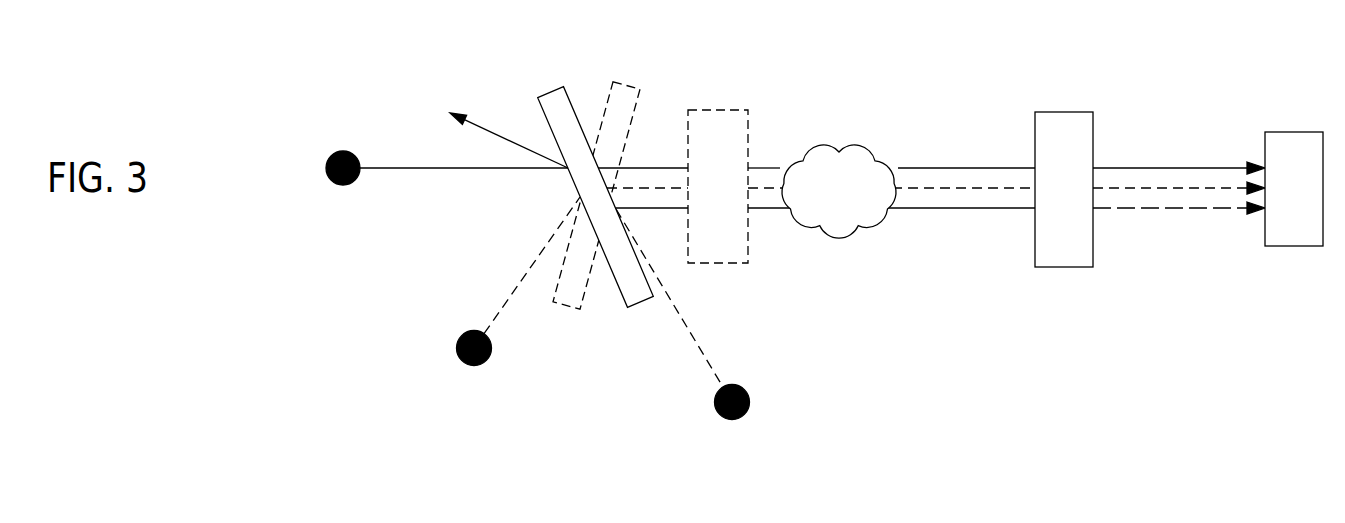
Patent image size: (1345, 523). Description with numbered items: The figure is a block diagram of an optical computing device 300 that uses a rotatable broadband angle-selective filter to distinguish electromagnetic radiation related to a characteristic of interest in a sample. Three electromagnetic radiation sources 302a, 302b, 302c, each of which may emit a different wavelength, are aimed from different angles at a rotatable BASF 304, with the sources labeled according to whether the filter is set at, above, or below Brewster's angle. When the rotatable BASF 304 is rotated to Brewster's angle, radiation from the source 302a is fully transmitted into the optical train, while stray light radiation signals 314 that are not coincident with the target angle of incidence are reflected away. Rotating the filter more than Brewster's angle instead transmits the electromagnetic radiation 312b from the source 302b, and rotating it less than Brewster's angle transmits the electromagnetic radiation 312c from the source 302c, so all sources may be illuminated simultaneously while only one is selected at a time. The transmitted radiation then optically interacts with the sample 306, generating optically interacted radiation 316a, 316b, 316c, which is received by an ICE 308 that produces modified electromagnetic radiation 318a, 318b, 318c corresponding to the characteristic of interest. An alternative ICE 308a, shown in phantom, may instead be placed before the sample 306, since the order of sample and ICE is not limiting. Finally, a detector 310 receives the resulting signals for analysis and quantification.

The optical computing device 300 is at (857, 69).
The electromagnetic radiation source 302a is at (342, 149).
The electromagnetic radiation source 302b is at (455, 345).
The electromagnetic radiation source 302c is at (752, 402).
The rotatable BASF 304 is at (548, 95).
The sample 306 is at (855, 202).
The ICE 308 is at (1080, 202).
The ICE 308a is at (742, 134).
The detector 310 is at (1310, 202).
The electromagnetic radiation 312b is at (517, 287).
The electromagnetic radiation 312c is at (687, 327).
The stray light radiation signals 314 is at (490, 132).
The optically interacted radiation 316a is at (947, 168).
The optically interacted radiation 316b is at (927, 190).
The optically interacted radiation 316c is at (990, 210).
The modified electromagnetic radiation 318a is at (1187, 168).
The modified electromagnetic radiation 318b is at (1160, 193).
The modified electromagnetic radiation 318c is at (1223, 212).